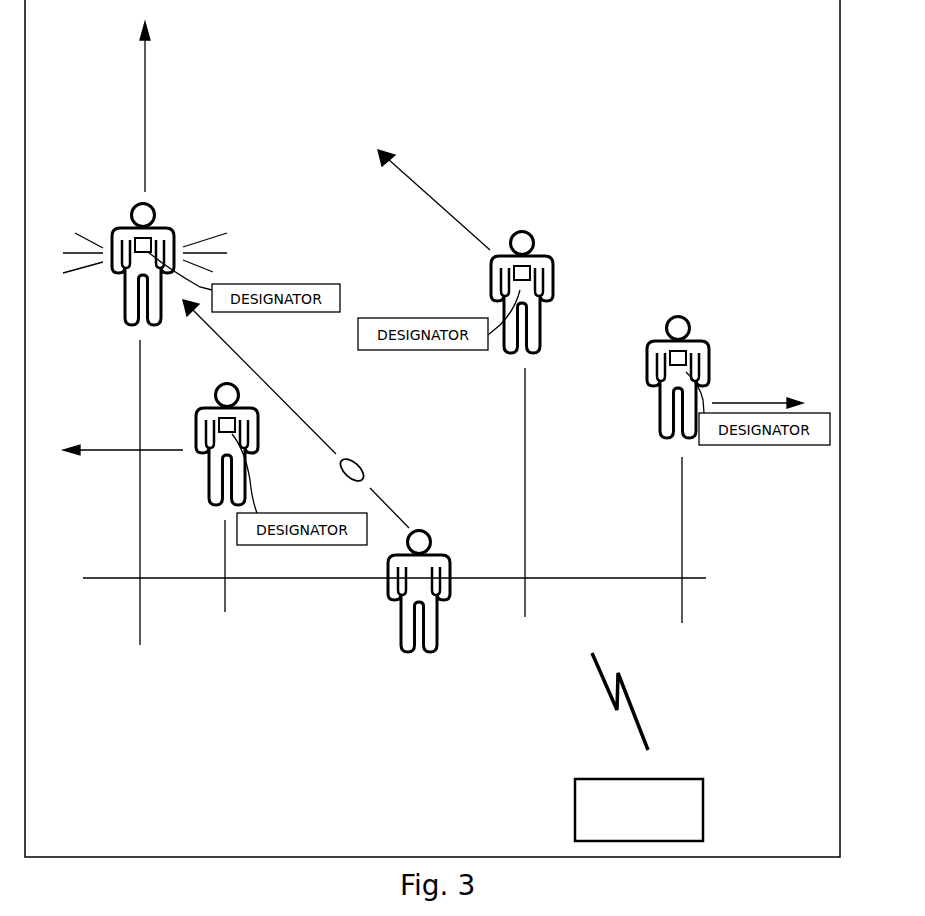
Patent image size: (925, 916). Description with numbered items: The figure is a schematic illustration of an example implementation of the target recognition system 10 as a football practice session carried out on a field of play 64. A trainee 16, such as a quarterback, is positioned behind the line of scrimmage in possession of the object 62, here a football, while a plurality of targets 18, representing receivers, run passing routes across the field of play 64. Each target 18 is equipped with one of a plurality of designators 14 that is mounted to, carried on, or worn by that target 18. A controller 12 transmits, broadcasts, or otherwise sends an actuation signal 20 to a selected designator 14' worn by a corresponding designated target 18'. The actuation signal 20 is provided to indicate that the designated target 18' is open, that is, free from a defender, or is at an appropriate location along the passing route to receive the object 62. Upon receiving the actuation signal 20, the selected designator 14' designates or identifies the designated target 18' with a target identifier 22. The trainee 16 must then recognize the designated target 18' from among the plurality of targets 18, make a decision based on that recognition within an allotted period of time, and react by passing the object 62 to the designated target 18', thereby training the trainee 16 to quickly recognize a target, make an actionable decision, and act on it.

The target recognition system 10 is at (617, 221).
The controller 12 is at (692, 779).
The designator 14 is at (438, 369).
The selected designator 14' is at (125, 252).
The trainee 16 is at (442, 555).
The target 18 is at (480, 350).
The designated target 18' is at (165, 216).
The actuation signal 20 is at (628, 680).
The target identifier 22 is at (214, 232).
The object 62 is at (365, 462).
The field of play 64 is at (123, 800).